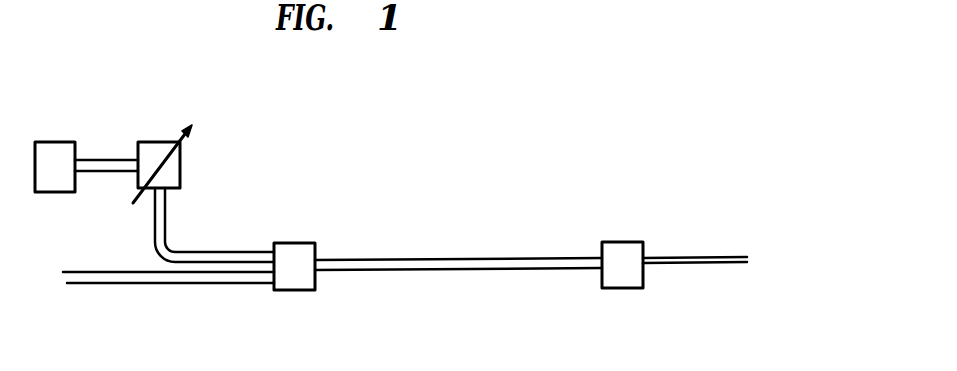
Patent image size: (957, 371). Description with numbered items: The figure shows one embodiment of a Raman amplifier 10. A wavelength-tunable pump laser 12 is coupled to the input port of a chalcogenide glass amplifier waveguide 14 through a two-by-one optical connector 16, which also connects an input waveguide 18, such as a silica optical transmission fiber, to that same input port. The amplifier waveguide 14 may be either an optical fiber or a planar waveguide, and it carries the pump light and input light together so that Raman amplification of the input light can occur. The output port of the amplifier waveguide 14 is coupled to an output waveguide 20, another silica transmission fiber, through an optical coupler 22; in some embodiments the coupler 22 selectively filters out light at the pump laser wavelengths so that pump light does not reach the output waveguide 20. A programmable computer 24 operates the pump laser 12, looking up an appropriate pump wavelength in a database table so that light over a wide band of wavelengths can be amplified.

The Raman amplifier 10 is at (528, 146).
The wavelength-tunable pump laser 12 is at (183, 153).
The chalcogenide glass amplifier waveguide 14 is at (480, 270).
The 2×1 optical connector 16 is at (317, 253).
The input waveguide 18 is at (127, 285).
The output waveguide 20 is at (722, 265).
The optical coupler 22 is at (647, 252).
The programmable computer 24 is at (66, 178).